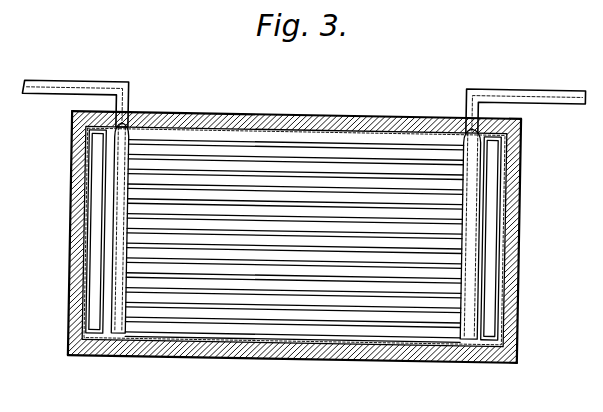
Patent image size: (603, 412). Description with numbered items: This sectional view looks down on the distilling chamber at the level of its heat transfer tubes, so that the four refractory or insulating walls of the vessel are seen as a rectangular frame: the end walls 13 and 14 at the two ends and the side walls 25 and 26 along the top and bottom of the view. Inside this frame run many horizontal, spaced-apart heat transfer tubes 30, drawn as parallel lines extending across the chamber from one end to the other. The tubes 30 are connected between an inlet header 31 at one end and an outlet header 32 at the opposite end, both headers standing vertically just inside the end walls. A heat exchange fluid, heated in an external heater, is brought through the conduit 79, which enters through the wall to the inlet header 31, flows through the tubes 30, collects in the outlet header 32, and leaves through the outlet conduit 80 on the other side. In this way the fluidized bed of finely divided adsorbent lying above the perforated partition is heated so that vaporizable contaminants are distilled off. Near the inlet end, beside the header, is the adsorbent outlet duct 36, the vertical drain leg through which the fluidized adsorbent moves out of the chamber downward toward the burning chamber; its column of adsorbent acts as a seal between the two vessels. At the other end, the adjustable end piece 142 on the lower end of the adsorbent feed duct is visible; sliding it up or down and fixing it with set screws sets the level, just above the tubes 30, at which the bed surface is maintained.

The end wall 13 is at (518, 149).
The end wall 14 is at (70, 221).
The wall 25 is at (409, 356).
The wall 26 is at (405, 116).
The heat transfer tubes 30 is at (310, 170).
The inlet header 31 is at (115, 261).
The outlet header 32 is at (470, 264).
The adsorbent outlet duct 36 is at (87, 187).
The end piece 142 is at (494, 184).
The conduit 79 is at (84, 84).
The outlet conduit 80 is at (560, 85).